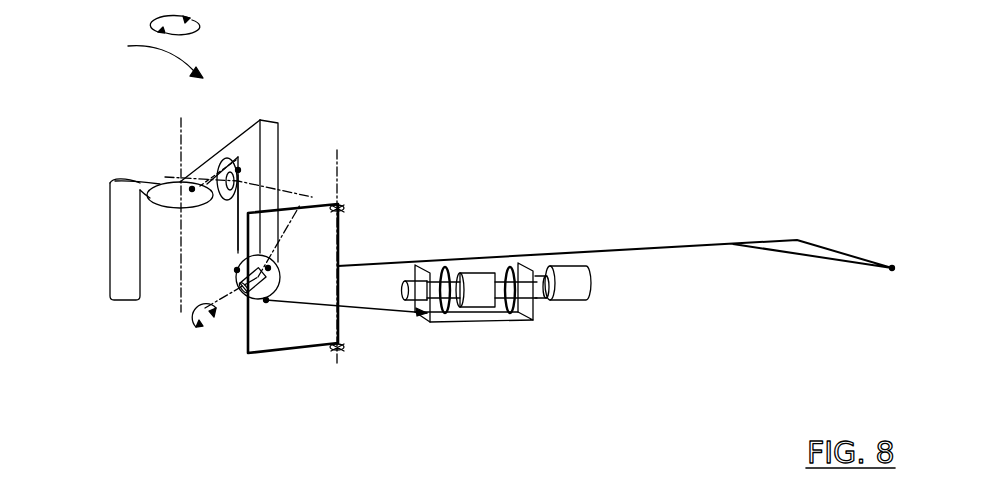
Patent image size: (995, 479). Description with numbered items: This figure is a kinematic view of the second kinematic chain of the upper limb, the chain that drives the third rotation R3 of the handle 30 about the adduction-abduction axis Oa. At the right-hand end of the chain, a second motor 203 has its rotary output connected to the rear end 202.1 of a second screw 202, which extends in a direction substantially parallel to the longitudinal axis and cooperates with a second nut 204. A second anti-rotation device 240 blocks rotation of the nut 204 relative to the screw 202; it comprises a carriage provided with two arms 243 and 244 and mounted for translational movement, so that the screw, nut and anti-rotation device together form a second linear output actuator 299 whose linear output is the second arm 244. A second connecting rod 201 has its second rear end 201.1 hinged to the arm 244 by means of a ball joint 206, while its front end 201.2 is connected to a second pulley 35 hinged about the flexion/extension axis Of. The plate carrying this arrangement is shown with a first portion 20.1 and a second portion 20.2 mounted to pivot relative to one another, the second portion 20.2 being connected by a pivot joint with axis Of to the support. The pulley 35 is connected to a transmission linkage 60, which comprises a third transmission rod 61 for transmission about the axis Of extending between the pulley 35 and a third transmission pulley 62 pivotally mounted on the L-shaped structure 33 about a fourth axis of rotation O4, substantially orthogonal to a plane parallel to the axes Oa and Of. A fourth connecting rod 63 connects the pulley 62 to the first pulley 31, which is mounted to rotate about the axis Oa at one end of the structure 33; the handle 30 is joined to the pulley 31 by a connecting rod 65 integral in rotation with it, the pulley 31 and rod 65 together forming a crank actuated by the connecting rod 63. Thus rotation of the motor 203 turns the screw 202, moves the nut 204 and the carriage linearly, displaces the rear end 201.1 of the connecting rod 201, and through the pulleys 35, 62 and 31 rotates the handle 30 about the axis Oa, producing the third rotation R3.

The handle 30 is at (120, 302).
The first pulley 31 is at (168, 186).
The L-shaped structure 33 is at (212, 132).
The second pulley 35 is at (248, 258).
The transmission linkage 60 is at (270, 110).
The third transmission rod 61 is at (240, 175).
The third transmission pulley 62 is at (232, 158).
The fourth connecting rod 63 is at (205, 205).
The connecting rod 65 is at (136, 183).
The second linear output actuator 299 is at (141, 58).
The third rotation R3 is at (150, 24).
The fourth axis of rotation O4 is at (312, 197).
The flexion/extension axis Of is at (195, 314).
The adduction-abduction axis Oa is at (181, 313).
The first portion 20.1 is at (680, 250).
The second portion 20.2 is at (275, 356).
The second connecting rod 201 is at (372, 300).
The second rear end 201.1 is at (428, 322).
The second front end 201.2 is at (260, 302).
The second screw 202 is at (406, 283).
The rear end of the screw 202.1 is at (540, 322).
The second motor 203 is at (572, 268).
The second nut 204 is at (485, 273).
The ball joint 206 is at (420, 316).
The second anti-rotation device 240 is at (492, 320).
The first arm 243 is at (518, 265).
The second arm 244 is at (420, 270).